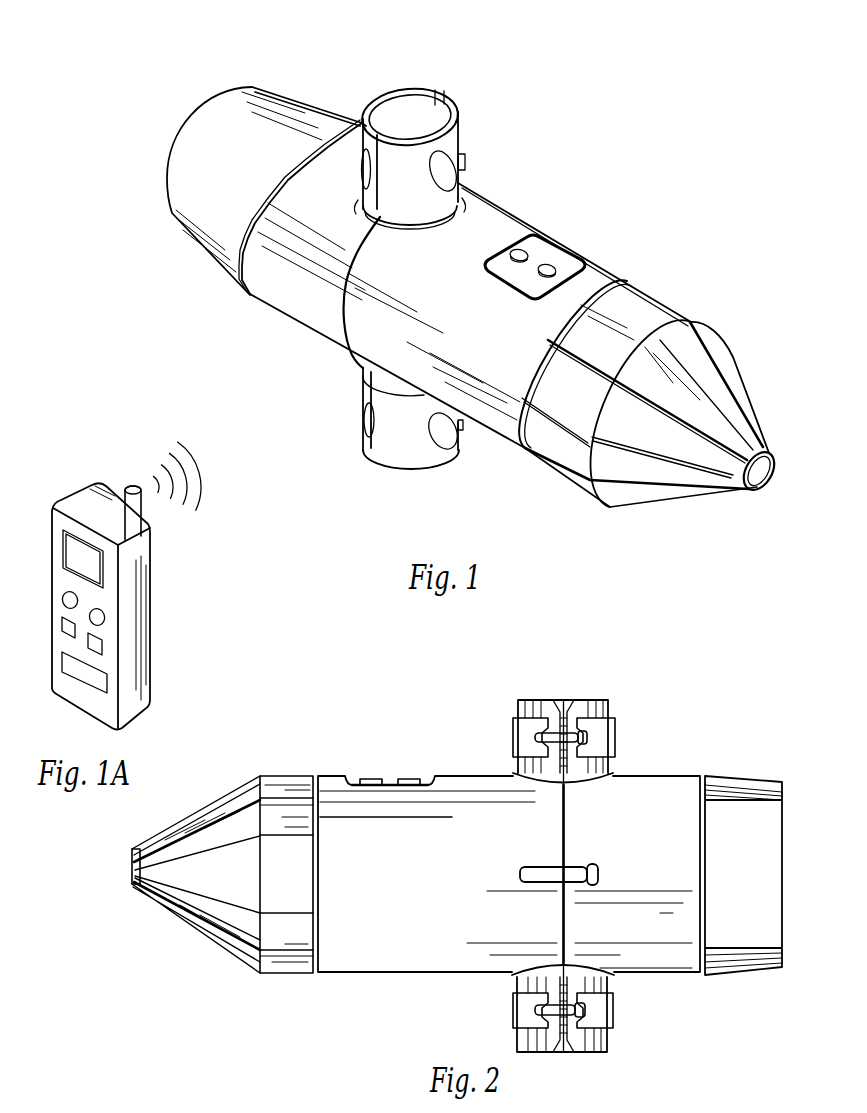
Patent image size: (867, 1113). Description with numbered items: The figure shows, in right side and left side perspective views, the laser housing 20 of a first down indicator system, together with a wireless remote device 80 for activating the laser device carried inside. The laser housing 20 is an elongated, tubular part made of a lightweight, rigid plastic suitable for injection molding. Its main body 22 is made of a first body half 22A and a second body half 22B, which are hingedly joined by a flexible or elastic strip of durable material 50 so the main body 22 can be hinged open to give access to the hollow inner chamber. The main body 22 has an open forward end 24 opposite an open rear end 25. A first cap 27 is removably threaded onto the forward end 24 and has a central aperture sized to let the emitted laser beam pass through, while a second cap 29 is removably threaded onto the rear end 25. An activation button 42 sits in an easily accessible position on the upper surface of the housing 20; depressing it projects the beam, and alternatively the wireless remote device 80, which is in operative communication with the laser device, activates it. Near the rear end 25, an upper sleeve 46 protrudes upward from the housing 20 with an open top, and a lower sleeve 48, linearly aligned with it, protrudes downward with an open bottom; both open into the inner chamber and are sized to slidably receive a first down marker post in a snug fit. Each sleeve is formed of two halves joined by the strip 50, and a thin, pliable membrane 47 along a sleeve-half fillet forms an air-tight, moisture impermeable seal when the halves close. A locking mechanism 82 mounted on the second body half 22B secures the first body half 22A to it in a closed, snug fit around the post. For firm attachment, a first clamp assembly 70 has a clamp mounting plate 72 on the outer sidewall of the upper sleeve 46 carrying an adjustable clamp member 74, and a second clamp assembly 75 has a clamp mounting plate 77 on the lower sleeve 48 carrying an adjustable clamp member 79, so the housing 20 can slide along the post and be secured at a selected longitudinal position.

In FIG. 1, the laser housing 20 is at (478, 275).
In FIG. 2, the laser housing 20 is at (462, 864).
In FIG. 1, the main body 22 is at (321, 310).
In FIG. 1, the first body half 22A is at (492, 388).
In FIG. 1, the second body half 22B is at (343, 340).
In FIG. 1, the open forward end 24 is at (622, 284).
In FIG. 2, the open forward end 24 is at (286, 874).
In FIG. 1, the open rear end 25 is at (354, 120).
In FIG. 1, the first cap 27 is at (736, 386).
In FIG. 2, the first cap 27 is at (203, 940).
In FIG. 1, the second cap 29 is at (218, 125).
In FIG. 2, the second cap 29 is at (733, 792).
In FIG. 1, the activation button 42 is at (549, 266).
In FIG. 2, the activation button 42 is at (390, 782).
In FIG. 1, the upper sleeve 46 is at (416, 157).
In FIG. 2, the pliable membrane 47 is at (567, 698).
In FIG. 1, the lower sleeve 48 is at (377, 459).
In FIG. 1, the flexible or elastic strip of durable material 50 is at (340, 291).
In FIG. 1, the first clamp assembly 70 is at (416, 260).
In FIG. 2, the first clamp assembly 70 is at (571, 864).
In FIG. 1, the clamp mounting plate 72 is at (452, 179).
In FIG. 2, the clamp mounting plate 72 is at (600, 745).
In FIG. 1, the adjustable clamp member 74 is at (360, 170).
In FIG. 2, the adjustable clamp member 74 is at (578, 728).
In FIG. 2, the second clamp assembly 75 is at (534, 1010).
In FIG. 2, the clamp mounting plate 77 is at (613, 1013).
In FIG. 2, the adjustable clamp member 79 is at (578, 1017).
In FIG. 1A, the wireless remote device 80 is at (132, 633).
In FIG. 2, the locking mechanism 82 is at (532, 872).